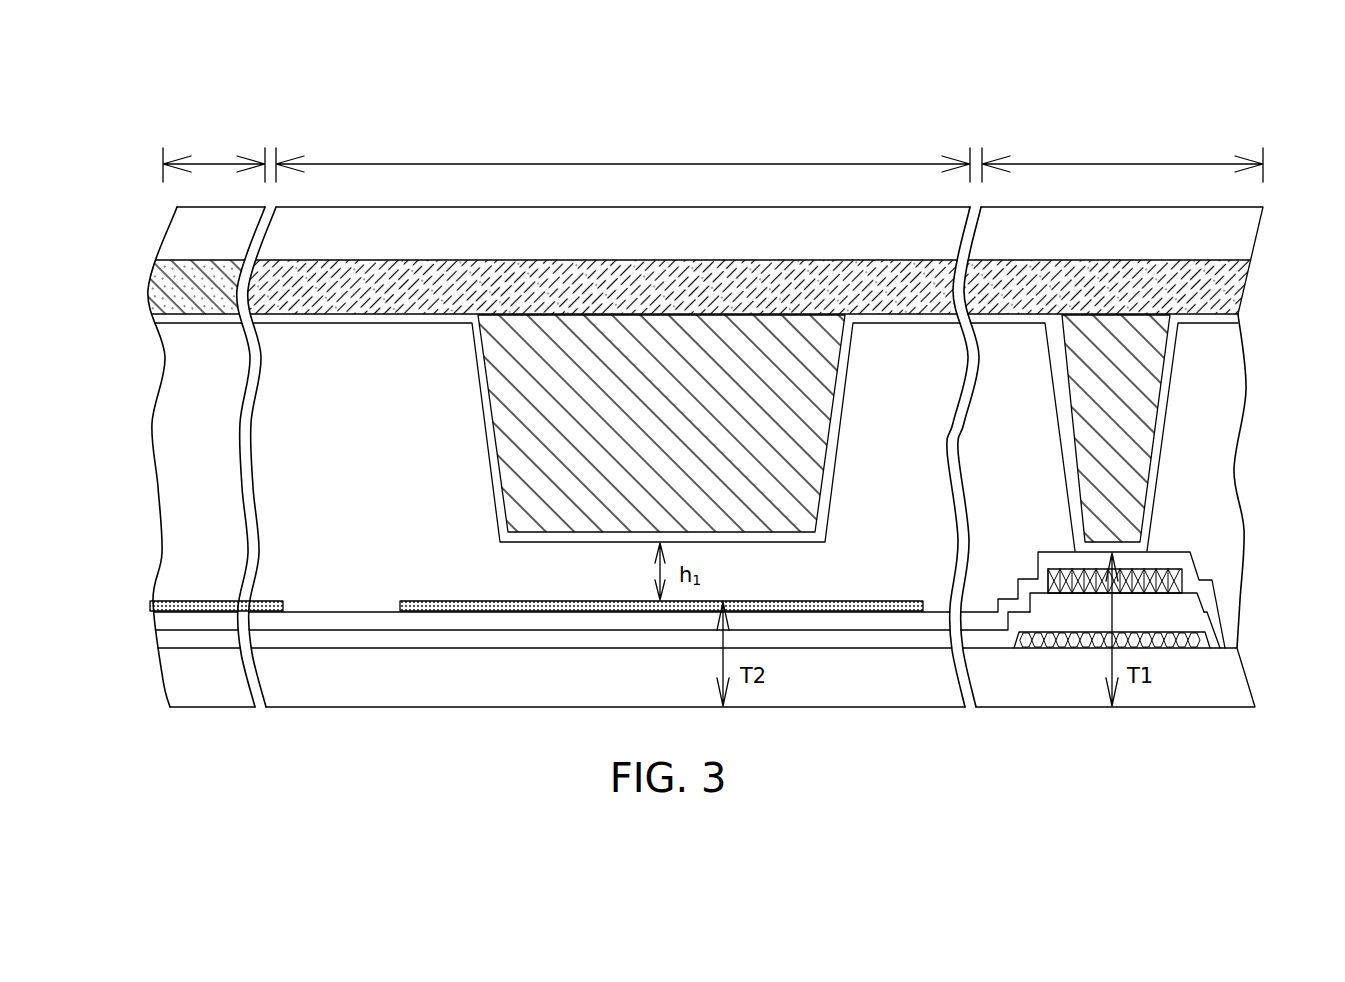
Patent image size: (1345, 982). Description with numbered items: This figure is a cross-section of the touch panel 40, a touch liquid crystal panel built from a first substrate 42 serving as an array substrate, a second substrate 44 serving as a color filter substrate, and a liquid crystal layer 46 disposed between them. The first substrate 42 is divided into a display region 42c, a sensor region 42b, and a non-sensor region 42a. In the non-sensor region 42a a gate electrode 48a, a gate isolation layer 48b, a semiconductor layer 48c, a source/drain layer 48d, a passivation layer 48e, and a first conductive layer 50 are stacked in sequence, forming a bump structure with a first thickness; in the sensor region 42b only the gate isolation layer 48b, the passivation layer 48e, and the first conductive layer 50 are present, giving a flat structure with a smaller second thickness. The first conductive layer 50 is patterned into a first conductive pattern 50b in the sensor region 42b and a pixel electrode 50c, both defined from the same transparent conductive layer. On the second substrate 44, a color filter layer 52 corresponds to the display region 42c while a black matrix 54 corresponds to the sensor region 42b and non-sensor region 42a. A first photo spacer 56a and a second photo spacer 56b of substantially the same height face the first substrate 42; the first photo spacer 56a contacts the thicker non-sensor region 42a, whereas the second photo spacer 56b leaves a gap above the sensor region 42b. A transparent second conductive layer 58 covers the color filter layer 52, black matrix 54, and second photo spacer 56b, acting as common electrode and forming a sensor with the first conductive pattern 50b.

The touch panel 40 is at (1200, 92).
The first substrate 42 is at (195, 695).
The non-sensor region 42a is at (1122, 155).
The sensor region 42b is at (623, 155).
The display region 42c is at (214, 155).
The second substrate 44 is at (195, 245).
The liquid crystal layer 46 is at (1208, 470).
The gate electrode 48a is at (1203, 650).
The gate isolation layer 48b is at (1197, 629).
The semiconductor layer 48c is at (1191, 604).
The source/drain layer 48d is at (1186, 580).
The passivation layer 48e is at (1180, 556).
The first conductive layer 50 is at (415, 533).
The first conductive pattern 50b is at (413, 601).
The pixel electrode 50c is at (267, 601).
The color filter layer 52 is at (195, 297).
The black matrix 54 is at (637, 297).
The first photo spacer 56a is at (1094, 418).
The second photo spacer 56b is at (633, 418).
The second conductive layer 58 is at (1210, 328).